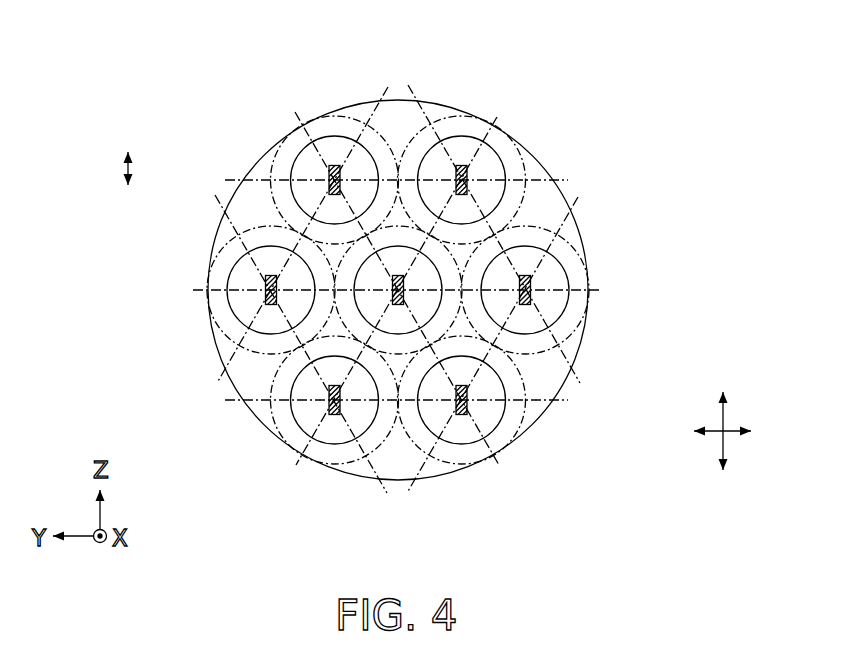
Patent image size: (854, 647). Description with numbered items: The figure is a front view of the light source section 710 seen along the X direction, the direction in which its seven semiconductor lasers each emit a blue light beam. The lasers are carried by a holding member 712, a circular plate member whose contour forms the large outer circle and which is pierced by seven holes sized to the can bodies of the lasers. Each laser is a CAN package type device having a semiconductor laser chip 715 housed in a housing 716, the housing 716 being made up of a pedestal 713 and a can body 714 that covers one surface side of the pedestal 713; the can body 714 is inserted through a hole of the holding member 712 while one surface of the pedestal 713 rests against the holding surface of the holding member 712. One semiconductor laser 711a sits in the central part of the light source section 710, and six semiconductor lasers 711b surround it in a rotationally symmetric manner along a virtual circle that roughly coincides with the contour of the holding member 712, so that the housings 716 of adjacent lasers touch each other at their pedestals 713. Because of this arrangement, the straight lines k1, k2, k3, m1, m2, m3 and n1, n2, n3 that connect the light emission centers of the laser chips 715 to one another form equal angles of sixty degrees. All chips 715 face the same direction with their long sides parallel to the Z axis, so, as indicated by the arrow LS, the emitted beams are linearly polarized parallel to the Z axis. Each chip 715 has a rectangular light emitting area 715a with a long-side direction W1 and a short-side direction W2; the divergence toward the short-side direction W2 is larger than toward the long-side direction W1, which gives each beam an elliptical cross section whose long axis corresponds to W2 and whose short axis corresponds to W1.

The light source section 710 is at (420, 280).
The semiconductor laser at center 711a is at (451, 257).
The peripheral semiconductor laser 711b is at (413, 279).
The holding member 712 is at (363, 466).
The pedestal 713 is at (232, 247).
The can body 714 is at (243, 313).
The semiconductor laser chip 715 is at (264, 281).
The light emitting area 715a is at (526, 274).
The housing 716 is at (242, 219).
The straight line k1 is at (537, 172).
The straight line k2 is at (592, 286).
The straight line k3 is at (543, 410).
The straight line m1 is at (388, 87).
The straight line m2 is at (497, 117).
The straight line m3 is at (578, 197).
The straight line n1 is at (372, 474).
The straight line n2 is at (487, 448).
The straight line n3 is at (560, 350).
The polarization direction arrow LS is at (126, 165).
The long-side direction W1 is at (725, 415).
The short-side direction W2 is at (722, 438).